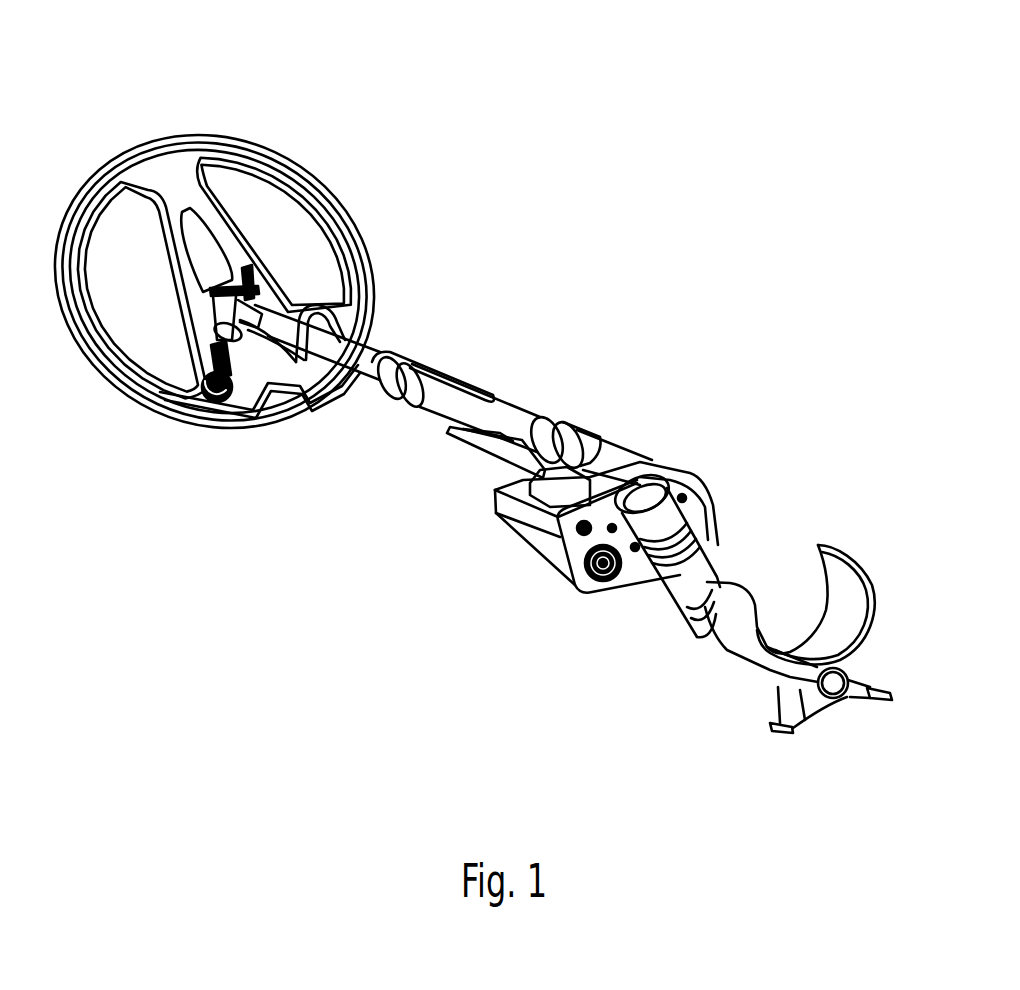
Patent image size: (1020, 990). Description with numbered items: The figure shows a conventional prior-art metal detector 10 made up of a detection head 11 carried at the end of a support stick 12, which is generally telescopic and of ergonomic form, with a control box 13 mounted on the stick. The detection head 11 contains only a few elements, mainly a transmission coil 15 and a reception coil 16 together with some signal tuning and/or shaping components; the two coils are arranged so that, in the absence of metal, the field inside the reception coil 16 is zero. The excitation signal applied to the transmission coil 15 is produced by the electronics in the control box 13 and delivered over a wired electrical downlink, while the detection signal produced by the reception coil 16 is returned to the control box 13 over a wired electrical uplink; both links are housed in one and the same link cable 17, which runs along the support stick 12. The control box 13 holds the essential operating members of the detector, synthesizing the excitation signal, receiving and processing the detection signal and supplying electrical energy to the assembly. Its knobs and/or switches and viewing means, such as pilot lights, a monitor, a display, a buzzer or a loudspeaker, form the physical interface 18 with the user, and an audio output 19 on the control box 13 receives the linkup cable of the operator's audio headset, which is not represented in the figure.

The metal detector 10 is at (637, 222).
The detection head 11 is at (270, 157).
The support stick 12 is at (445, 402).
The control box 13 is at (522, 533).
The transmission coil 15 is at (104, 391).
The reception coil 16 is at (338, 191).
The link cable 17 is at (413, 357).
The physical interface 18 is at (690, 513).
The audio output 19 is at (555, 585).